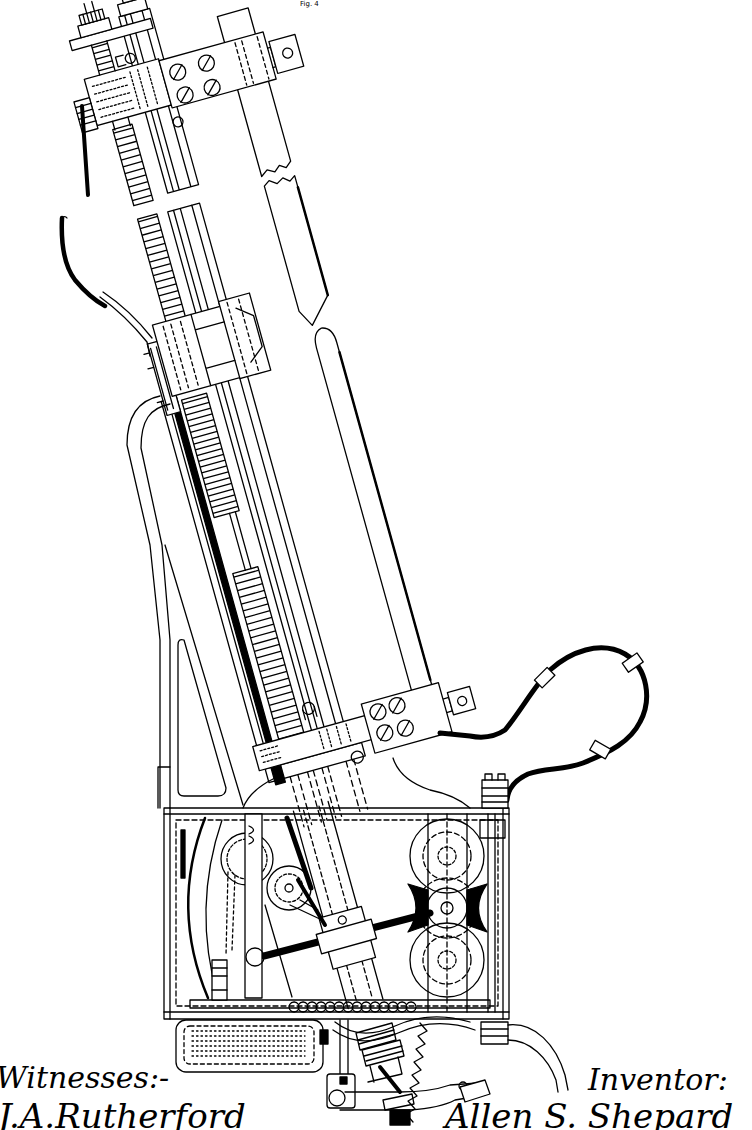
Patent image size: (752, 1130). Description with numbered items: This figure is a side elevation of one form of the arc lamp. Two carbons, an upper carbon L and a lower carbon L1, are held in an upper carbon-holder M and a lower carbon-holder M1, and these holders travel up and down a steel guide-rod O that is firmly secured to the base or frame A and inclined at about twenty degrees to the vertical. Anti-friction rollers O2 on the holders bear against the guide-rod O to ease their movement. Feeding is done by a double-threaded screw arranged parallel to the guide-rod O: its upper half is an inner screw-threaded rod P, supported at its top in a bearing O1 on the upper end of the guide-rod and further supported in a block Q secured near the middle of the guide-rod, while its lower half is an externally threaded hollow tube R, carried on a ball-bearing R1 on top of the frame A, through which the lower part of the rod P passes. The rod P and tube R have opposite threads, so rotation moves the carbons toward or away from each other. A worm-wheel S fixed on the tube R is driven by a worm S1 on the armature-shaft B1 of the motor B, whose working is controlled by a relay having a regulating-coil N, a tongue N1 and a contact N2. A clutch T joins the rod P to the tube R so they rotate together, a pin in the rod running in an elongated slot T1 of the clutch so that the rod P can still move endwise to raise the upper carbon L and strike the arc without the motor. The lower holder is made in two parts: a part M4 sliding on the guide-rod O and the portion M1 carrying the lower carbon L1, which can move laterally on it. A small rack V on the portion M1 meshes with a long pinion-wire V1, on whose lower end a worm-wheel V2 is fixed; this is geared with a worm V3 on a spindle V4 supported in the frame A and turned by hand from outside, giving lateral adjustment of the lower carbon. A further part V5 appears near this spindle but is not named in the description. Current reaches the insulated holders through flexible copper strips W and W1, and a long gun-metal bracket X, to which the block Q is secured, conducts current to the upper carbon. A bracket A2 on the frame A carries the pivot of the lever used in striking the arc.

The upper carbon L is at (275, 168).
The lower carbon L1 is at (378, 546).
The guide-rod O is at (240, 409).
The bearing O1 is at (112, 44).
The anti-friction rollers O2 is at (372, 778).
The screw-threaded rod P is at (150, 246).
The screw-threaded tube R is at (262, 694).
The ball-bearing R1 is at (271, 779).
The rack V is at (262, 756).
The pinion-wire V1 is at (196, 472).
The worm-wheel V2 is at (320, 880).
The worm V3 is at (304, 906).
The spindle V4 is at (313, 877).
The block V5 is at (412, 1114).
The block Q is at (252, 304).
The flexible copper strip W is at (94, 286).
The flexible copper strip W1 is at (543, 724).
The upper carbon-holder M is at (187, 108).
The lower carbon-holder M1 is at (364, 730).
The sliding part of lower carbon-holder M4 is at (372, 706).
The bracket X is at (173, 642).
The frame A is at (331, 915).
The bracket A2 is at (325, 1088).
The motor B is at (412, 860).
The armature-shaft B1 is at (447, 903).
The worm-wheel S is at (394, 928).
The worm S1 is at (508, 903).
The regulating-coil N is at (247, 906).
The tongue N1 is at (240, 906).
The contact N2 is at (253, 957).
The clutch T is at (386, 1052).
The elongated slot T1 is at (385, 1112).